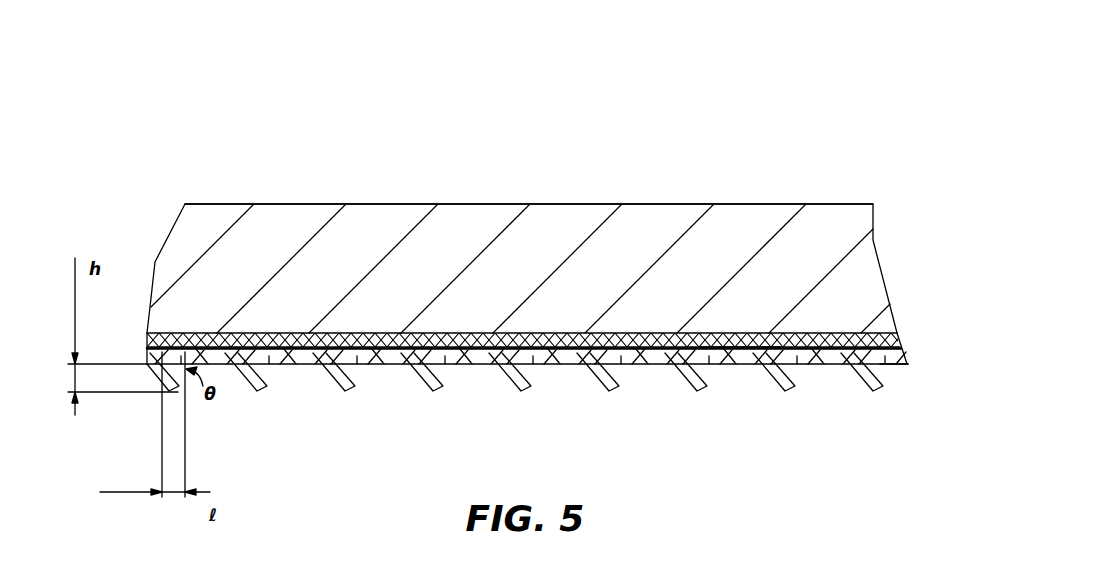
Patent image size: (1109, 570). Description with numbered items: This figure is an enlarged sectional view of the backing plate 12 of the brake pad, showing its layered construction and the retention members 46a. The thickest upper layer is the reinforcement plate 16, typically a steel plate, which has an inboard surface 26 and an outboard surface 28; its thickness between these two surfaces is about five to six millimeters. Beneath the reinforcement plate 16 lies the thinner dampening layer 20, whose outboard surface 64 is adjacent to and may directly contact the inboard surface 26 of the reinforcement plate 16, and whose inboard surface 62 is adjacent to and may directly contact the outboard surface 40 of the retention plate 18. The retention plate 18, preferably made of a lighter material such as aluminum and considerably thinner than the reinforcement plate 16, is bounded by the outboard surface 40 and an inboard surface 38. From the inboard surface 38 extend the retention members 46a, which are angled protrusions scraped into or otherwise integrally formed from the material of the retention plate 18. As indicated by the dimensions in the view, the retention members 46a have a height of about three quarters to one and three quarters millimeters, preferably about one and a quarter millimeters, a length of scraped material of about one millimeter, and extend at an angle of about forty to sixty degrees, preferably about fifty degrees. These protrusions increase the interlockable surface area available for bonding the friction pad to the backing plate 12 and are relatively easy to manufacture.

The backing plate 12 is at (750, 120).
The reinforcement plate 16 is at (823, 218).
The outboard surface 28 is at (743, 203).
The outboard surface 64 is at (828, 340).
The outboard surface 40 is at (847, 340).
The inboard surface 62 is at (812, 349).
The dampening layer 20 is at (897, 338).
The retention plate 18 is at (898, 356).
The inboard surface 38 is at (892, 367).
The inboard surface 26 is at (732, 340).
The retention members 46a is at (153, 370).